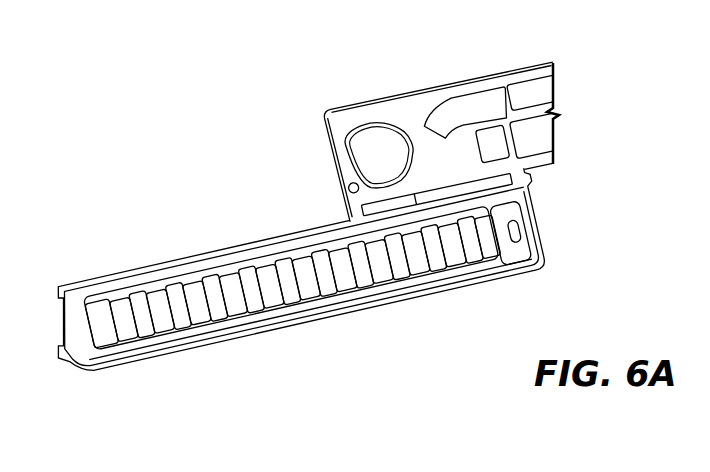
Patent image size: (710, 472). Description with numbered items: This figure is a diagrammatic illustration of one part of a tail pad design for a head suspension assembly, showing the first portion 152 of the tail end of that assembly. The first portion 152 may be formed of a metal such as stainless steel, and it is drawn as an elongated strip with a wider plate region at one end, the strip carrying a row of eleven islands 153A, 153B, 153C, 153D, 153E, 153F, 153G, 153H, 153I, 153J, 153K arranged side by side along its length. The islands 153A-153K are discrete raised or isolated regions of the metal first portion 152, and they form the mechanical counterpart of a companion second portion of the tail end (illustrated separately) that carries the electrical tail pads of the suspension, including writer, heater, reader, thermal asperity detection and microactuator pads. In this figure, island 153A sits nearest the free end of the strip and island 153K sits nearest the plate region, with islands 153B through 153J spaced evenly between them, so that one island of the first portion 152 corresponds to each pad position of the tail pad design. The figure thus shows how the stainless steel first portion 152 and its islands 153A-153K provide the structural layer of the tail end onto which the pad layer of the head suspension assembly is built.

The first portion 152 is at (215, 178).
The island 153A is at (127, 322).
The island 153B is at (163, 313).
The island 153C is at (200, 303).
The island 153D is at (233, 298).
The island 153E is at (270, 290).
The island 153F is at (306, 282).
The island 153G is at (343, 274).
The island 153H is at (378, 270).
The island 153I is at (417, 243).
The island 153J is at (451, 247).
The island 153K is at (485, 245).